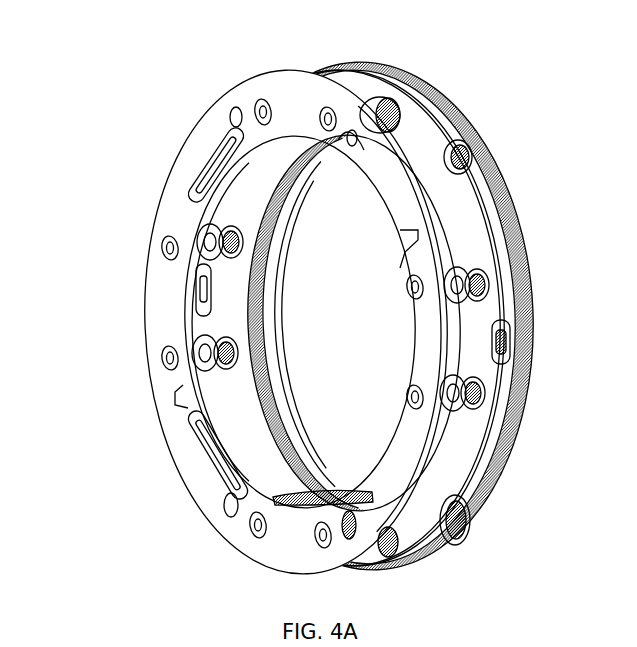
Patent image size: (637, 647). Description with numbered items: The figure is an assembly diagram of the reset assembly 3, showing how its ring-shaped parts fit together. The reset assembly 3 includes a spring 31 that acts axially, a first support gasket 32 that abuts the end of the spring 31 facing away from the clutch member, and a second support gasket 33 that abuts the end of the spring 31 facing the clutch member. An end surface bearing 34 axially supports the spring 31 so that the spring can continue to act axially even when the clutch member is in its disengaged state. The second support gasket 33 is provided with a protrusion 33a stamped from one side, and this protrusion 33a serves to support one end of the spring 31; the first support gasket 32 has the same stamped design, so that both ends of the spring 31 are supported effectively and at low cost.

The reset assembly 3 is at (100, 79).
The spring 31 is at (213, 222).
The first support gasket 32 is at (260, 87).
The second support gasket 33 is at (375, 85).
The protrusion 33a is at (473, 392).
The end surface bearing 34 is at (462, 125).